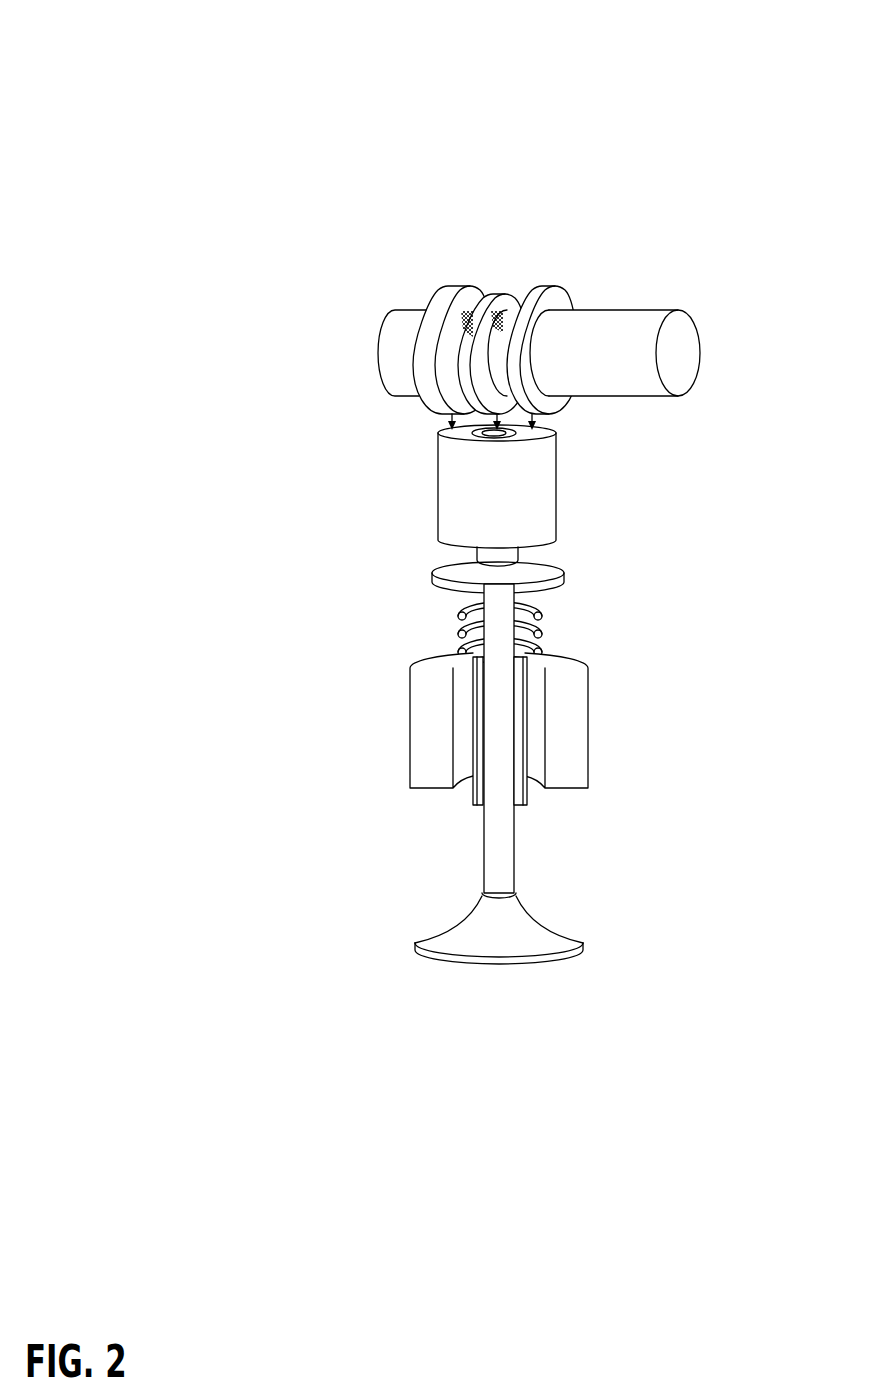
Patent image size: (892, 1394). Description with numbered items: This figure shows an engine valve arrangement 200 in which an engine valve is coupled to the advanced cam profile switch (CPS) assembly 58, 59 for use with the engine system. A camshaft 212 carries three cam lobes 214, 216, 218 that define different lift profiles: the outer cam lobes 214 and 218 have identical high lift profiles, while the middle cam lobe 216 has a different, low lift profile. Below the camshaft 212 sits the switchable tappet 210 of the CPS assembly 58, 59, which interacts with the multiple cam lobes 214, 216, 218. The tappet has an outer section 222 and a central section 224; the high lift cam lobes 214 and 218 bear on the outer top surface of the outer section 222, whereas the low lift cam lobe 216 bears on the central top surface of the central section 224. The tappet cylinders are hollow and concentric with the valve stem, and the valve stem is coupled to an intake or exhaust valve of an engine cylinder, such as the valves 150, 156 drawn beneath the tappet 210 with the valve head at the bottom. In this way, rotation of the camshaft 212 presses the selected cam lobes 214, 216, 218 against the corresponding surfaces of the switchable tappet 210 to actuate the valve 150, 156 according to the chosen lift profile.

The valve actuation system 200 is at (758, 38).
The cam profile switch assembly 58 is at (418, 597).
The cam profile switch assembly 59 is at (241, 321).
The switchable tappet 210 is at (492, 482).
The camshaft 212 is at (643, 308).
The cam lobe 214 is at (470, 284).
The cam lobe 216 is at (489, 296).
The cam lobe 218 is at (543, 287).
The outer section 222 is at (438, 434).
The central section 224 is at (557, 438).
The valve 150 is at (509, 774).
The valve 156 is at (517, 855).